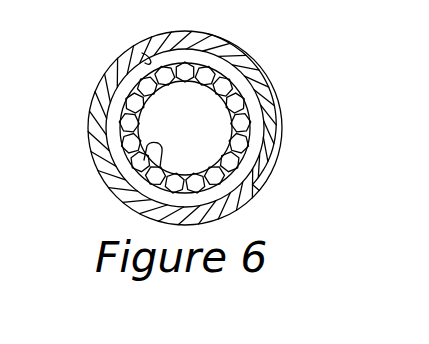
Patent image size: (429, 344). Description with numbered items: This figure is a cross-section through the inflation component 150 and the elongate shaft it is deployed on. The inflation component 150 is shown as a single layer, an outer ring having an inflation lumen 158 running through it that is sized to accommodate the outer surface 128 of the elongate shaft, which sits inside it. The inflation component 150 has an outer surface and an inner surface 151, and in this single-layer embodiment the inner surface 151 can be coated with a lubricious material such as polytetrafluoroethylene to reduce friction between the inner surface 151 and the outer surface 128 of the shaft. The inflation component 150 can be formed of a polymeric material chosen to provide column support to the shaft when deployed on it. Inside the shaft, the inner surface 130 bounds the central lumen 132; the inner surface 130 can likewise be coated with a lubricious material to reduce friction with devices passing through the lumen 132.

The inflation component 150 is at (253, 60).
The outer surface 128 is at (260, 184).
The inflation lumen 158 is at (257, 108).
The inner surface 151 is at (142, 53).
The inner surface 130 is at (147, 146).
The lumen 132 is at (162, 110).